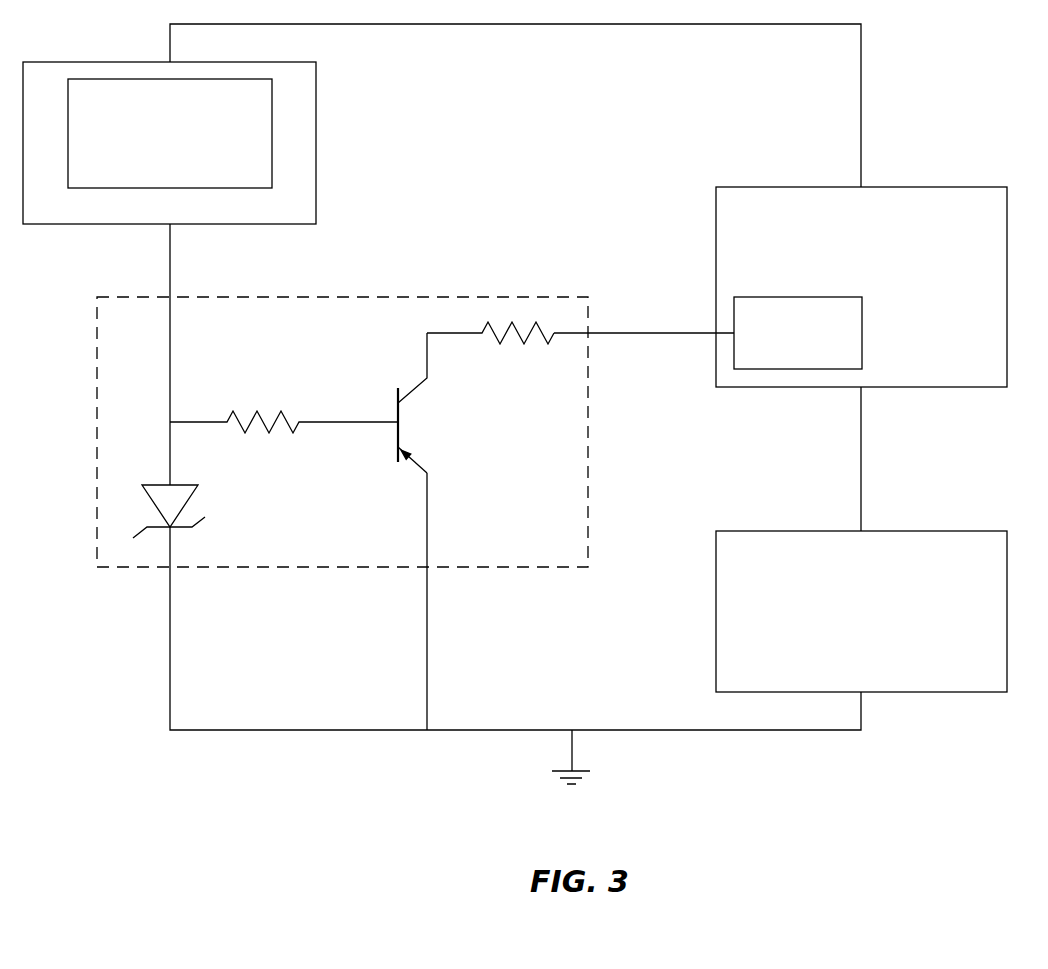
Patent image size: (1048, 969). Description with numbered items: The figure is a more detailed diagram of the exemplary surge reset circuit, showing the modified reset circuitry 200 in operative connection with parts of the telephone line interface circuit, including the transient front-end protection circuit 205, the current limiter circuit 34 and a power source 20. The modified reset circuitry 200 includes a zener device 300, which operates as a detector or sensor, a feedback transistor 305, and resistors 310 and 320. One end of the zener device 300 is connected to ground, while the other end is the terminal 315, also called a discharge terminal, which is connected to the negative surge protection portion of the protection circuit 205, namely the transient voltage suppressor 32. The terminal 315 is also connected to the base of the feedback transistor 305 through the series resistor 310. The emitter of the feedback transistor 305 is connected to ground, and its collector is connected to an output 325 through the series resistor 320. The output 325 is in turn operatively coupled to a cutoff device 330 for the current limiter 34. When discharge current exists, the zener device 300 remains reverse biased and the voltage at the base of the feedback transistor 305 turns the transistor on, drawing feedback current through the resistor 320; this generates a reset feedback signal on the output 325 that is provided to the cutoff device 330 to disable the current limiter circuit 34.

The CVG (power source) 20 is at (968, 531).
The transient voltage suppressor 32 is at (228, 188).
The current limiter circuit 34 is at (968, 187).
The modified reset circuitry 200 is at (510, 297).
The transient front-end protection circuit 205 is at (316, 108).
The zener device 300 is at (197, 500).
The feedback transistor 305 is at (410, 423).
The resistor 310 is at (263, 433).
The terminal 315 is at (177, 253).
The resistor 320 is at (508, 345).
The output 325 is at (622, 340).
The cutoff device 330 is at (862, 323).